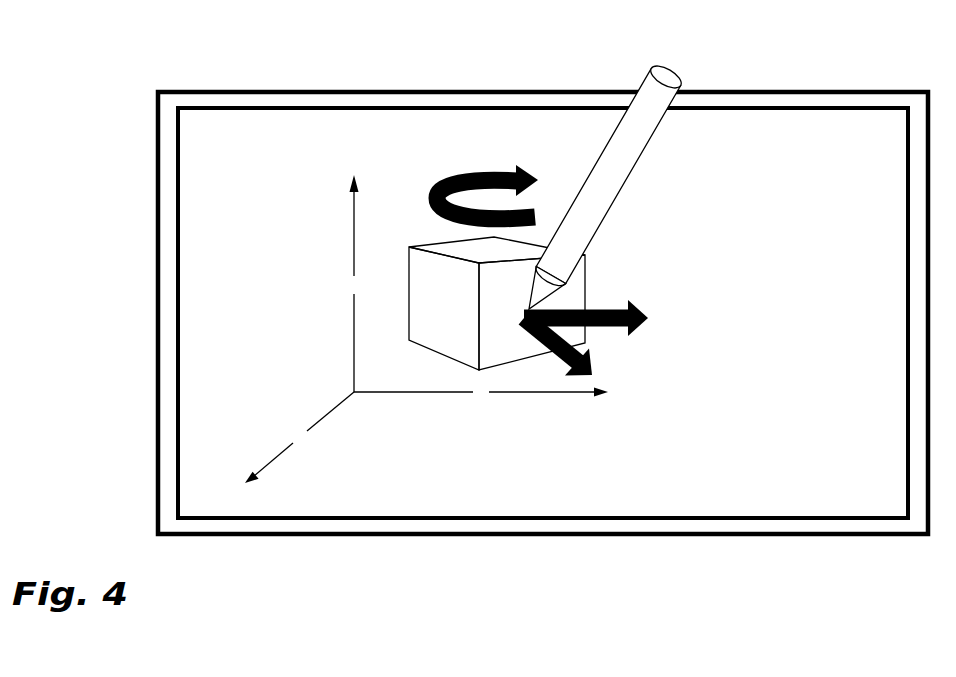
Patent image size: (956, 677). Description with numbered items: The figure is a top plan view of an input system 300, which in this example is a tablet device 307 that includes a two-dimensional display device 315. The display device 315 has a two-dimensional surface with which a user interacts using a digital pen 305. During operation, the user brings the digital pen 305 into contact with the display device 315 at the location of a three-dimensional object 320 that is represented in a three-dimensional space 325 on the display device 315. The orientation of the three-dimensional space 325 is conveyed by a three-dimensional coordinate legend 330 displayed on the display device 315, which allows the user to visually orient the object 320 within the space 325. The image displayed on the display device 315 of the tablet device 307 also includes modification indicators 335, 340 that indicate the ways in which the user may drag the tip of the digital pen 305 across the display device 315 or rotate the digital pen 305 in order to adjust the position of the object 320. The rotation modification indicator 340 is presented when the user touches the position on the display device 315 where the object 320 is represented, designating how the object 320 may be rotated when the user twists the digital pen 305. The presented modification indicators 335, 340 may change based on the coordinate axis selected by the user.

The input system 300 is at (197, 68).
The digital pen 305 is at (590, 223).
The tablet device 307 is at (172, 175).
The 2D display device 315 is at (210, 265).
The 3D object 320 is at (503, 357).
The 3D space 325 is at (530, 443).
The 3D coordinate legend 330 is at (365, 422).
The modification indicator 335 is at (620, 340).
The rotation modification indicator 340 is at (462, 163).